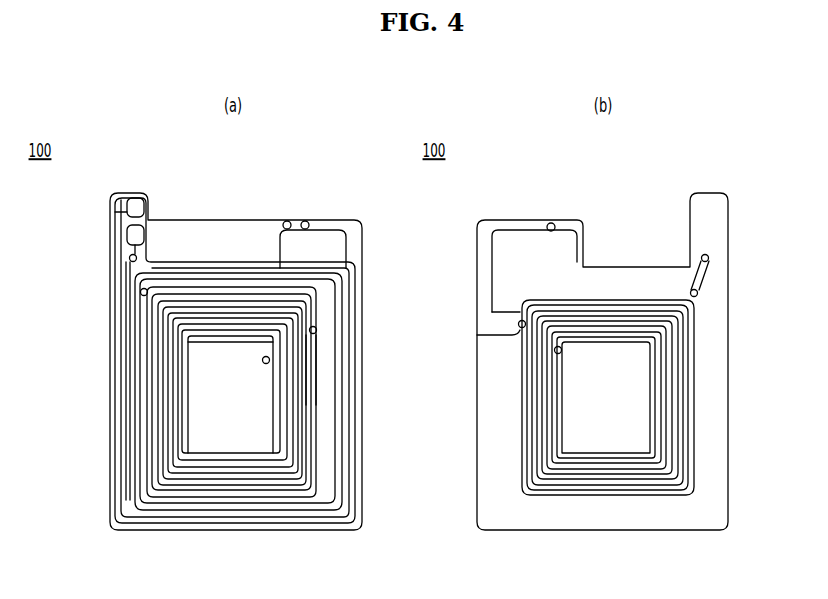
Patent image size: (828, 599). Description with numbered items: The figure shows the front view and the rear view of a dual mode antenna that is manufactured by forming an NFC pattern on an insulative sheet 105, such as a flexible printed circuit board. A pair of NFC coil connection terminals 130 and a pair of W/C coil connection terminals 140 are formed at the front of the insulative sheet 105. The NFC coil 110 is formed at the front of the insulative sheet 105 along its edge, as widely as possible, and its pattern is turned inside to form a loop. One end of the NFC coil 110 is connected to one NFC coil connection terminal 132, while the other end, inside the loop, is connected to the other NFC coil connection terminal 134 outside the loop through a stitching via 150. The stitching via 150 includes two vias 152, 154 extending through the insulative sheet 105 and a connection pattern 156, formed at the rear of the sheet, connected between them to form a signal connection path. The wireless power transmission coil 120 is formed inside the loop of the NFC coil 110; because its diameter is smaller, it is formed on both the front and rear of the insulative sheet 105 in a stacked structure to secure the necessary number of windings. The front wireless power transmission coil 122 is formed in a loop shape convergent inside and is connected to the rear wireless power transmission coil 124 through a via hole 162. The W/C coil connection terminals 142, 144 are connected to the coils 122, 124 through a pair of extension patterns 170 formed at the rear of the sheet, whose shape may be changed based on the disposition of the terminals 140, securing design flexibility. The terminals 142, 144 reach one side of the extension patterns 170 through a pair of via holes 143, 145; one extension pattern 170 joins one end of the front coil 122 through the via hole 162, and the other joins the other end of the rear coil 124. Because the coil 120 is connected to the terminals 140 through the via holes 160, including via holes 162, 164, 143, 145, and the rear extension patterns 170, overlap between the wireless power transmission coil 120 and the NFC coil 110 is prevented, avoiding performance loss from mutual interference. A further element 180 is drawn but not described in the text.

The insulative sheet 105 is at (322, 497).
The NFC coil 110 is at (108, 430).
The wireless power transmission coil 120 is at (414, 391).
The wireless power transmission coil formed at the front 122 is at (310, 400).
The wireless power transmission coil formed at the rear 124 is at (522, 405).
The NFC coil connection terminals 130 is at (178, 226).
The NFC coil connection terminal 132 is at (146, 208).
The NFC coil connection terminal 134 is at (161, 239).
The W/C coil connection terminals 140 is at (419, 232).
The W/C coil connection terminal 142 is at (285, 221).
The via hole 143 is at (292, 230).
The W/C coil connection terminal 144 is at (306, 221).
The via hole 145 is at (310, 231).
The stitching via 150 is at (87, 366).
The via 152 is at (124, 257).
The via 154 is at (140, 293).
The connection pattern 156 is at (128, 270).
The via holes 160 is at (412, 330).
The via hole 162 is at (270, 360).
The via hole 164 is at (317, 330).
The extension patterns 170 is at (478, 240).
The magnetic sheet 180 is at (250, 492).